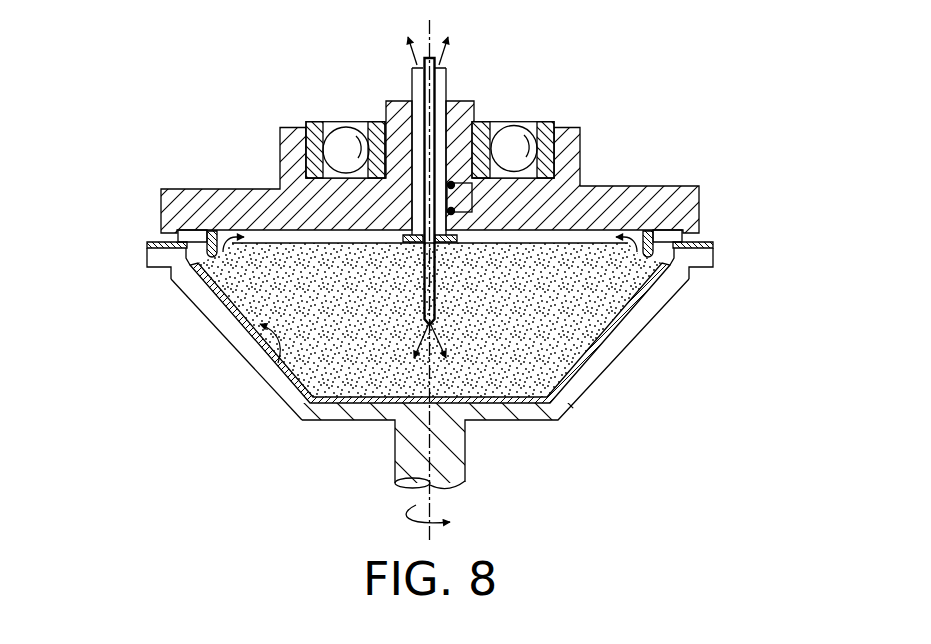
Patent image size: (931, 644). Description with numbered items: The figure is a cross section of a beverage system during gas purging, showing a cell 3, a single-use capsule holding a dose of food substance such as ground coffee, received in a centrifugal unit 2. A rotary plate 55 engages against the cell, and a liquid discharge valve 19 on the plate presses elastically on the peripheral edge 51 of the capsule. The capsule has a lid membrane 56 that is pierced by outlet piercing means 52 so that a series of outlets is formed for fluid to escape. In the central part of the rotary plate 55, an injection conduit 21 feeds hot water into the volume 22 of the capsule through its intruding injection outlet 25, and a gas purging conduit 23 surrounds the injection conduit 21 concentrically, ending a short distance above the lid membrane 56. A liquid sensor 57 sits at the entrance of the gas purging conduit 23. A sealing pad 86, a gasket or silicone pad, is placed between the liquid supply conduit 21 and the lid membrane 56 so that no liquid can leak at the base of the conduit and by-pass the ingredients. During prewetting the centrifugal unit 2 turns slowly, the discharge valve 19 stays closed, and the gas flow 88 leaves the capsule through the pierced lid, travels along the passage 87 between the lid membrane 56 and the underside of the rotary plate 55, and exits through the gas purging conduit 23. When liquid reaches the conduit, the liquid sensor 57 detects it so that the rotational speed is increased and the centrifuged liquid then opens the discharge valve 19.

The centrifugal unit 2 is at (229, 358).
The cell 3 is at (278, 363).
The liquid discharge valve 19 is at (135, 235).
The injection conduit 21 is at (447, 87).
The volume 22 is at (601, 345).
The gas purging conduit 23 is at (418, 84).
The injection outlet 25 is at (432, 307).
The peripheral edge 51 is at (720, 243).
The outlet piercing means 52 is at (188, 252).
The rotary plate 55 is at (676, 186).
The lid membrane 56 is at (588, 241).
The liquid sensor 57 is at (473, 195).
The sealing pad 86 is at (413, 252).
The passage 87 is at (550, 235).
The gas flow 88 is at (448, 53).